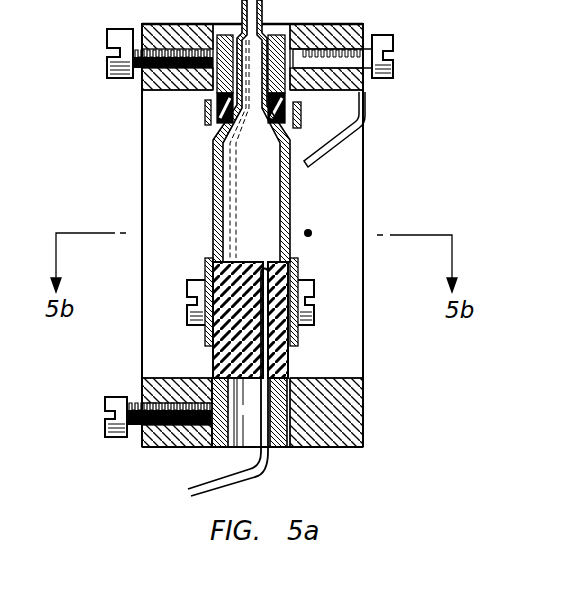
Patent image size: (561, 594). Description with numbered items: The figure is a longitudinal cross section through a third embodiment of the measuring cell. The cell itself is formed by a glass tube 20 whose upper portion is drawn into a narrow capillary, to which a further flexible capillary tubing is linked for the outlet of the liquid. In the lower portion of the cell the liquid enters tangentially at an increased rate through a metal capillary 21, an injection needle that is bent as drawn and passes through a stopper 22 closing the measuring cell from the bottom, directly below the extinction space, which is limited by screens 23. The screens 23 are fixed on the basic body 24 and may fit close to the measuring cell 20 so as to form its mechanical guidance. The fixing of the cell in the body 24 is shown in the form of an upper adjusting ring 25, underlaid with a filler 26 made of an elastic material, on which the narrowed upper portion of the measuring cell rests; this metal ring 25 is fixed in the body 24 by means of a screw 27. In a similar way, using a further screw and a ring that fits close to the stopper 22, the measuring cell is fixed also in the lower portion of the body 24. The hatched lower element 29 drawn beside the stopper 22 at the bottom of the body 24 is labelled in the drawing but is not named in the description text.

The glass tube 20 is at (292, 203).
The metal capillary 21 is at (262, 466).
The stopper 22 is at (284, 357).
The screens 23 is at (207, 152).
The basic body 24 is at (350, 424).
The upper adjusting ring 25 is at (300, 67).
The filler 26 is at (212, 102).
The screw 27 is at (112, 47).
The bushing 29 is at (278, 398).